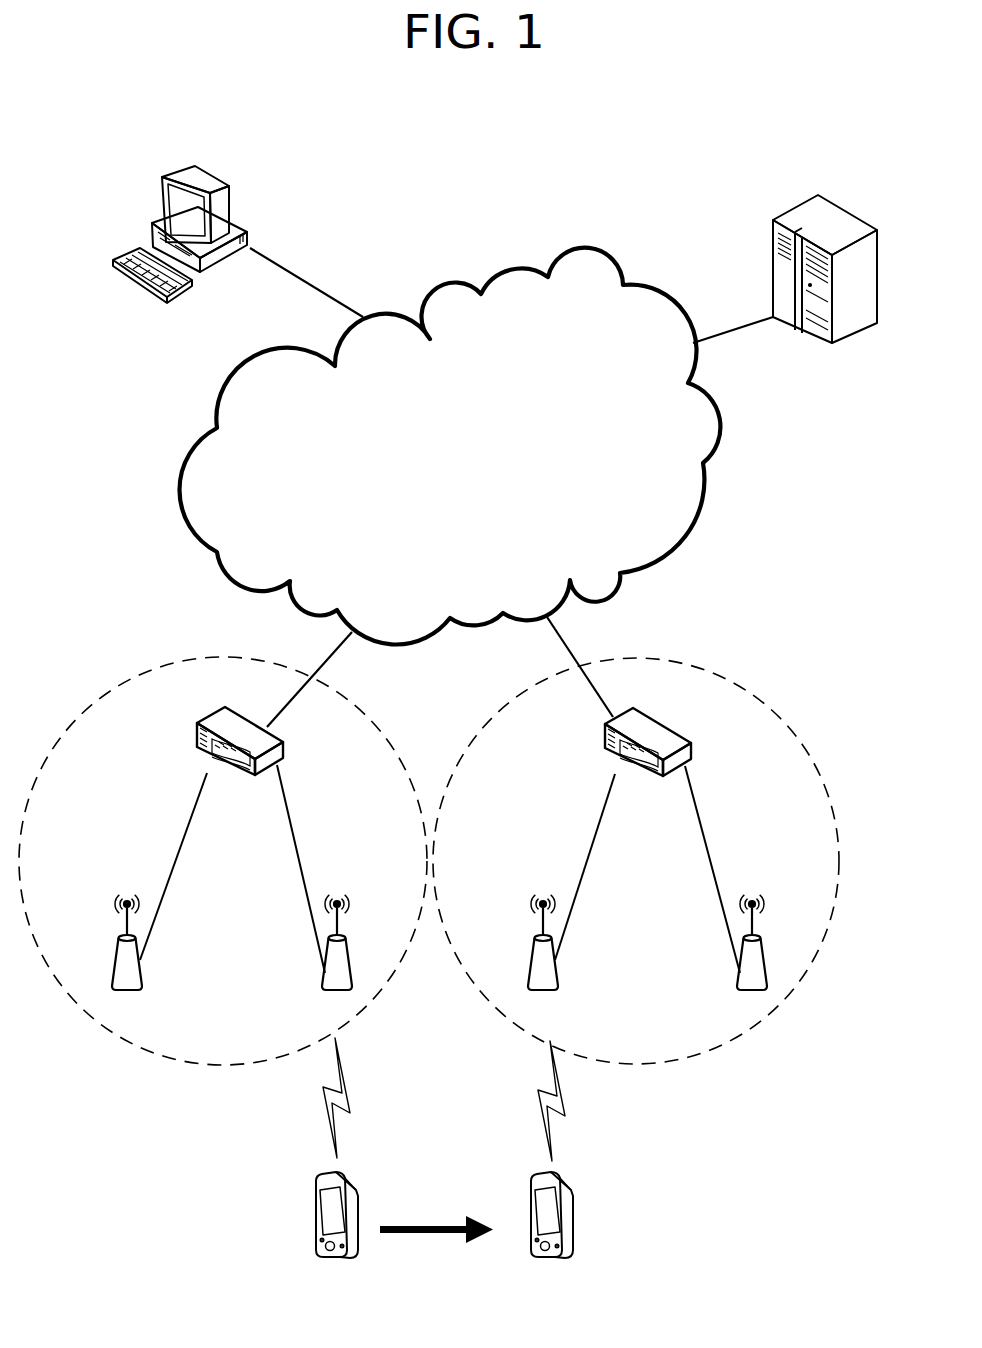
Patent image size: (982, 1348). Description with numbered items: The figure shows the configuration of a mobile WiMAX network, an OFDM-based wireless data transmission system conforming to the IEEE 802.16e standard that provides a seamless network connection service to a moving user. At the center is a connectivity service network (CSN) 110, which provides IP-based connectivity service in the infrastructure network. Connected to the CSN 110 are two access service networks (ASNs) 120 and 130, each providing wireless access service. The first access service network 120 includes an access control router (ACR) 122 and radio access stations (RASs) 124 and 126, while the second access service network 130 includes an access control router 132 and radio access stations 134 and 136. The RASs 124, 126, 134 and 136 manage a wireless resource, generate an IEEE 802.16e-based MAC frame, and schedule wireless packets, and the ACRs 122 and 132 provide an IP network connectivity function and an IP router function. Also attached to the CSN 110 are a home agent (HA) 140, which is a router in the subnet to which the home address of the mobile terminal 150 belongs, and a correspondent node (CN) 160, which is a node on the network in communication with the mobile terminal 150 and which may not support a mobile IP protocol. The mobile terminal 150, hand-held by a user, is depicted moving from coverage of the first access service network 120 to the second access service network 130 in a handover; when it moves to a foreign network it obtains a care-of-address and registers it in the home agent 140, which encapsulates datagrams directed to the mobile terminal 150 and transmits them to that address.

The connectivity service network 110 is at (720, 437).
The access service network 120 is at (337, 688).
The access control router 122 is at (277, 752).
The radio access station 124 is at (135, 975).
The radio access station 126 is at (325, 975).
The access service network 130 is at (688, 667).
The access control router 132 is at (695, 748).
The radio access station 134 is at (551, 975).
The radio access station 136 is at (740, 975).
The home agent 140 is at (798, 220).
The mobile terminal 150 is at (316, 1203).
The correspondent node 160 is at (228, 208).